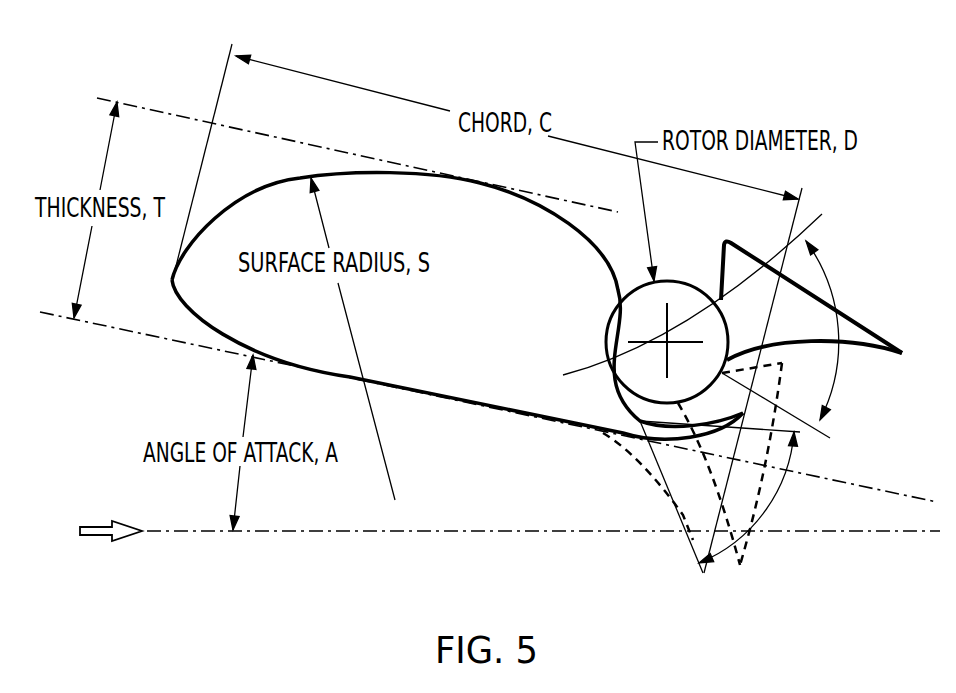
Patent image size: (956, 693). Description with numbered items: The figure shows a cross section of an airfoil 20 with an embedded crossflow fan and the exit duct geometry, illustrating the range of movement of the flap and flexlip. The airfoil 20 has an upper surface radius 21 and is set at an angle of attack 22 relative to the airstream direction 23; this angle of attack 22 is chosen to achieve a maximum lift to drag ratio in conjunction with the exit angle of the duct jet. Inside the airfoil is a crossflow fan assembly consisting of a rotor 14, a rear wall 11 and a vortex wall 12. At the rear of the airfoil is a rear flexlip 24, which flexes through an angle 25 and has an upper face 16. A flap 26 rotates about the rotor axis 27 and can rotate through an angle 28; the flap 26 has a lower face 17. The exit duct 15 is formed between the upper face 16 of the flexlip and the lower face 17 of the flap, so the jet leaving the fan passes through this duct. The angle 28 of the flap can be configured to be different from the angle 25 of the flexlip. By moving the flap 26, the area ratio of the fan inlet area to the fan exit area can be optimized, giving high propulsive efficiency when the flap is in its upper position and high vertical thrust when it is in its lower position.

The rear wall 11 is at (593, 352).
The vortex wall 12 is at (727, 325).
The rotor 14 is at (672, 280).
The exit duct 15 is at (707, 410).
The upper face 16 is at (663, 441).
The lower face 17 is at (857, 345).
The airfoil 20 is at (337, 172).
The upper surface radius 21 is at (353, 343).
The angle of attack 22 is at (242, 410).
The airstream direction 23 is at (104, 525).
The rear flexlip 24 is at (718, 440).
The angle 25 is at (797, 446).
The flap 26 is at (852, 310).
The rotor axis 27 is at (677, 302).
The angle 28 is at (825, 263).